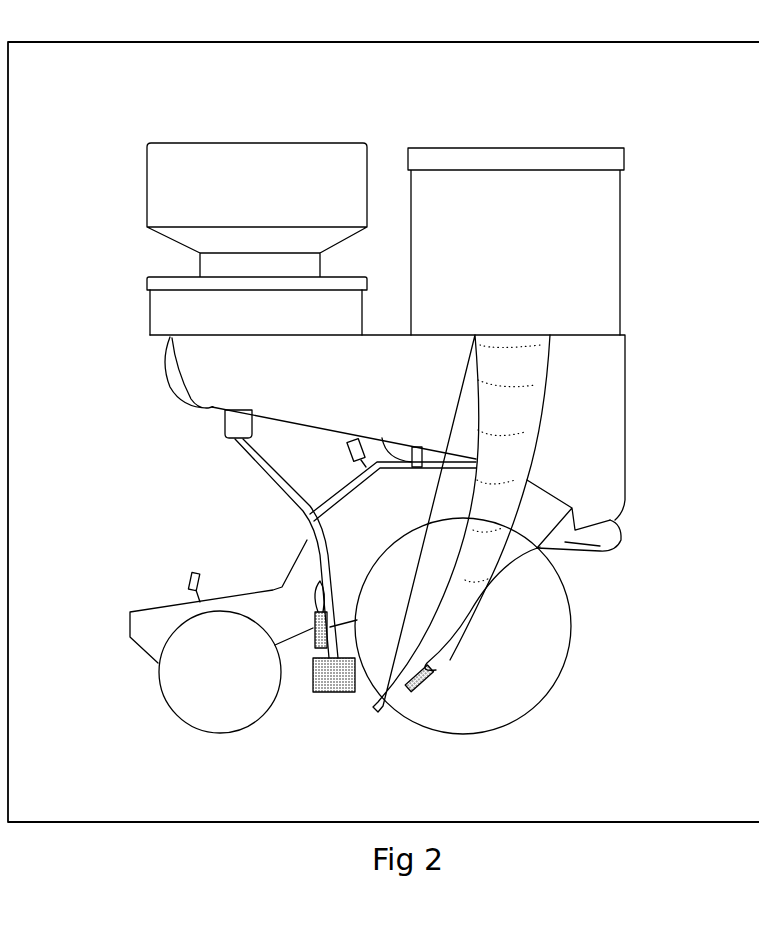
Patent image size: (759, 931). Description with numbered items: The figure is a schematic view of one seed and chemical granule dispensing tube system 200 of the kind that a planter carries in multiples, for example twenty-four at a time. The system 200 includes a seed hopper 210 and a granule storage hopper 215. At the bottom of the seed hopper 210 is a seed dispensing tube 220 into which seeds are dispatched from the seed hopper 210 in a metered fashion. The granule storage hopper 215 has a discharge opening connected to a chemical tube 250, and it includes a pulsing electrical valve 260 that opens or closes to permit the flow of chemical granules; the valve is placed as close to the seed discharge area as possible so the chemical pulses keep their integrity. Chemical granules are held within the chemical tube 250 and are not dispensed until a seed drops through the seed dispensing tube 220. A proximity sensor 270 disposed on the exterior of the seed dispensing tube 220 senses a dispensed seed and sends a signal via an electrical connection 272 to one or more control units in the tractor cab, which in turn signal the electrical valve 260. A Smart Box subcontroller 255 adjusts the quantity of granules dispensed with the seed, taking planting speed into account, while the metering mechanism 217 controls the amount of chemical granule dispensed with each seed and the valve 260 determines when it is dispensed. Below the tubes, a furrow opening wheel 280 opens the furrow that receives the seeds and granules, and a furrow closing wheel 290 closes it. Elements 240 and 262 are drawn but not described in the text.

The seed and chemical granule dispensing tube system 200 is at (520, 42).
The seed hopper 210 is at (596, 211).
The granule storage hopper 215 is at (165, 303).
The Smart Box metering mechanism 217 is at (255, 165).
The seed dispensing tube 220 is at (450, 610).
The mounting block 240 is at (238, 425).
The chemical tube 250 is at (275, 505).
The subcontroller 255 is at (315, 625).
The pulsing electrical valve 260 is at (330, 692).
The hook / coulter arm 262 is at (160, 383).
The proximity sensor 270 is at (425, 676).
The electrical connection 272 is at (633, 530).
The furrow opening wheel 280 is at (547, 702).
The furrow closing wheel 290 is at (173, 672).